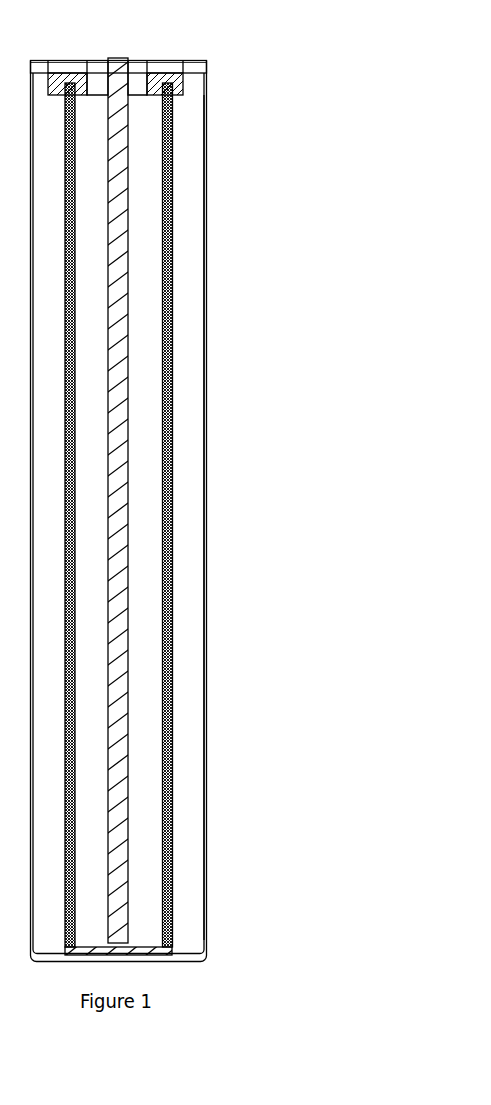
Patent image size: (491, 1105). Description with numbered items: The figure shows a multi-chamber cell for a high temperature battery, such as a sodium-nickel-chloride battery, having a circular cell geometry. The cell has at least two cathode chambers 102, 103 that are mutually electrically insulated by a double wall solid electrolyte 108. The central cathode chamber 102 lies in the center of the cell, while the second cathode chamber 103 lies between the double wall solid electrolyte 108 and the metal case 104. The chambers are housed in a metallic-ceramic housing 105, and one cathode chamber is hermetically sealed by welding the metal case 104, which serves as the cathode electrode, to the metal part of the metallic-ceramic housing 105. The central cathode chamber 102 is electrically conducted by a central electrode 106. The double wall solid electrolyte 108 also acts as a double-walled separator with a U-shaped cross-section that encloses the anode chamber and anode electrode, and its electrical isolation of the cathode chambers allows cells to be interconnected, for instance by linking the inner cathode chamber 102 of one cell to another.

The central cathode chamber 102 is at (137, 250).
The second cathode chamber 103 is at (183, 332).
The metal case 104 is at (202, 390).
The metallic-ceramic housing 105 is at (165, 90).
The central electrode 106 is at (213, 510).
The double wall solid electrolyte 108 is at (172, 530).